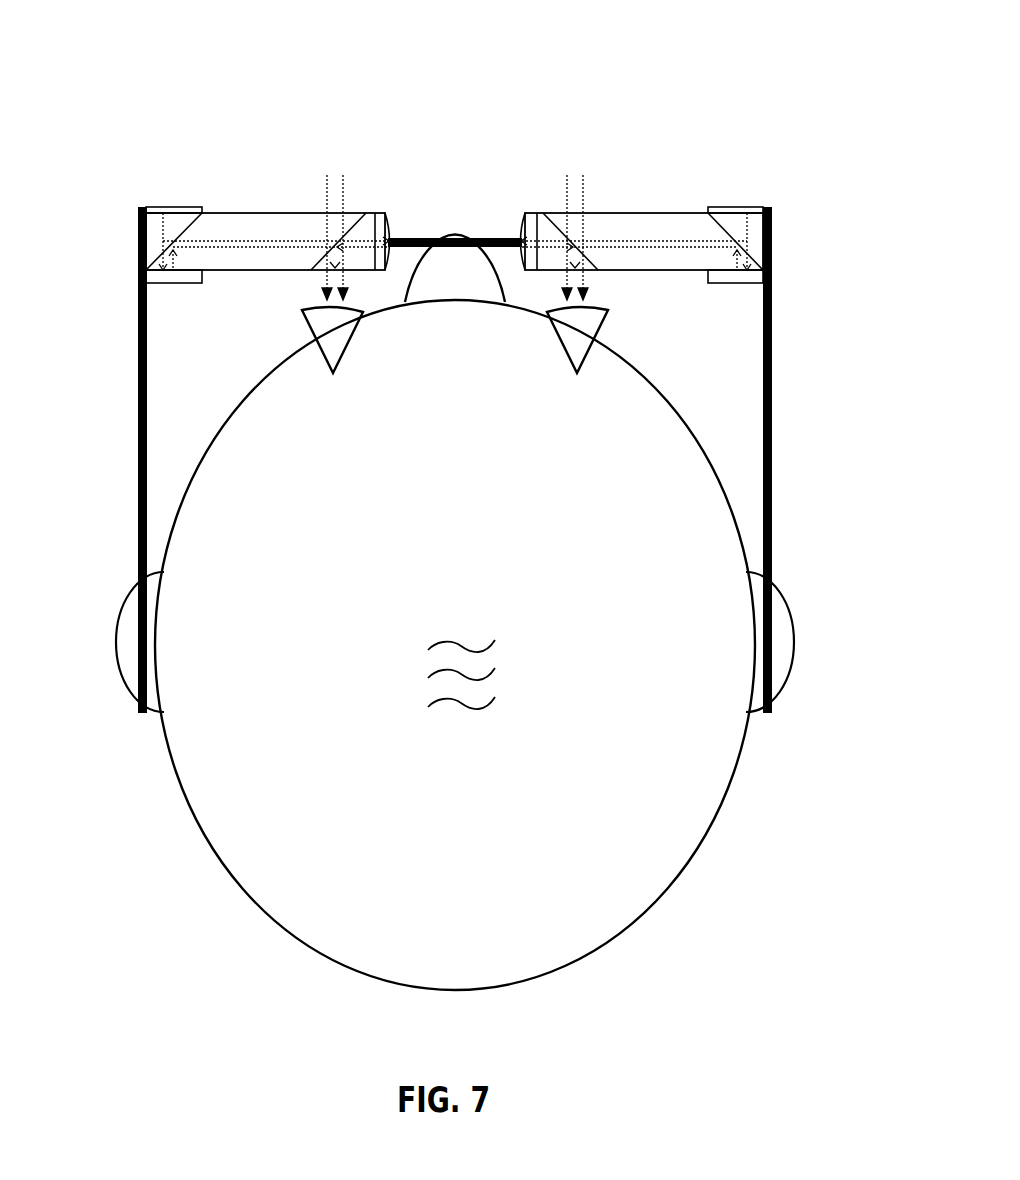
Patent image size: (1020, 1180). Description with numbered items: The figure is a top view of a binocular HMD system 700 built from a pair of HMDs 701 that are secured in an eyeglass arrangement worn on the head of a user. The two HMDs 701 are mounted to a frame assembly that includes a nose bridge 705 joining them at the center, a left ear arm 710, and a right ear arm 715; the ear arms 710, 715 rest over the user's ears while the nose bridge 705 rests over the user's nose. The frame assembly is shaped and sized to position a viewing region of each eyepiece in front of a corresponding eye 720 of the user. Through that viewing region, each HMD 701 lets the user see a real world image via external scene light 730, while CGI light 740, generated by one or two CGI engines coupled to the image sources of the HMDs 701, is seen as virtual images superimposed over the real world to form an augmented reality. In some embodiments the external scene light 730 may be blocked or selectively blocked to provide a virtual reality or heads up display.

The binocular HMD system 700 is at (712, 78).
The HMD 701 is at (185, 183).
The nose bridge 705 is at (484, 240).
The left ear arm 710 is at (138, 461).
The right ear arm 715 is at (772, 460).
The eye 720 is at (343, 358).
The external scene light 730 is at (327, 178).
The CGI light 740 is at (311, 270).